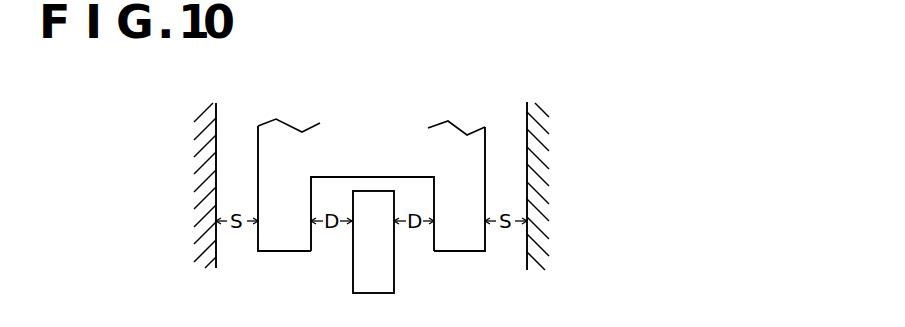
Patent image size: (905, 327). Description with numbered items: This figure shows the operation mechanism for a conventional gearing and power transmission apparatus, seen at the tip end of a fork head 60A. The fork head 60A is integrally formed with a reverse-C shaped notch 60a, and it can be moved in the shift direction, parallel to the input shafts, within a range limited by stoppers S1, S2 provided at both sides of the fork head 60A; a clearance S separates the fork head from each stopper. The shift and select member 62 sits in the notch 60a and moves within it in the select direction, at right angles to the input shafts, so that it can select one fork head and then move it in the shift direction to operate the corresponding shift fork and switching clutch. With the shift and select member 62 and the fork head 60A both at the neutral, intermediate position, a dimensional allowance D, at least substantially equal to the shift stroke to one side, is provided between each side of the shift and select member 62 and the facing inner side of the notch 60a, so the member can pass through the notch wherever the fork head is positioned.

The stopper S1 is at (216, 122).
The stopper S2 is at (527, 258).
The fork head 60A is at (398, 180).
The reverse-C shaped notch 60a is at (434, 237).
The shift and select member 62 is at (362, 263).